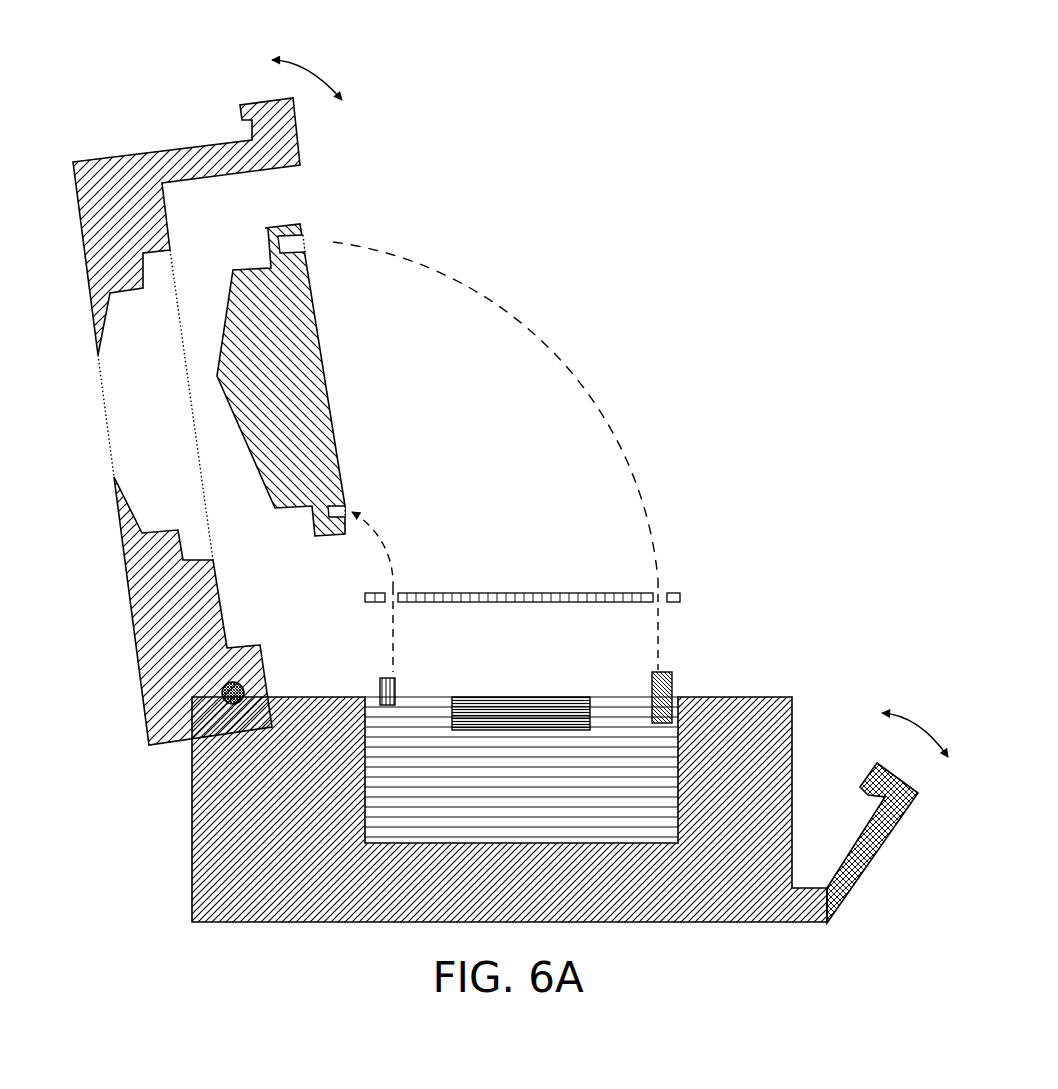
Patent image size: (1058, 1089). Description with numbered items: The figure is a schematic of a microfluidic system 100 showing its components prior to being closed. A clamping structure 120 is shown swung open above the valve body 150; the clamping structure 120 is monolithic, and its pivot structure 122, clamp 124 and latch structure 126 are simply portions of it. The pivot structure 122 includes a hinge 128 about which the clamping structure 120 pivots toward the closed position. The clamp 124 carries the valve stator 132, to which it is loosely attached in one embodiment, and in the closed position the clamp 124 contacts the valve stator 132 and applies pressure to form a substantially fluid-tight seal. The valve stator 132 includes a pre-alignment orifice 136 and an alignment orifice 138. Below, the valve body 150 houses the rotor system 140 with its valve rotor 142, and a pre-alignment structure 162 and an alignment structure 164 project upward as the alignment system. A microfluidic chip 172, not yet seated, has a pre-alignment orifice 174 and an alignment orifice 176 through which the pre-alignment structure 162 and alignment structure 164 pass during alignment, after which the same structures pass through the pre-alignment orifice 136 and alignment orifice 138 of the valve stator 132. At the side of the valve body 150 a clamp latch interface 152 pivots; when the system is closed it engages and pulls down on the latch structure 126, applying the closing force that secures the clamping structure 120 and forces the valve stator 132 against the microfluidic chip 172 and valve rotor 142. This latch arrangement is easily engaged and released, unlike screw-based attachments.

The microfluidic system 100 is at (452, 92).
The clamping structure 120 is at (200, 376).
The pivot structure 122 is at (135, 647).
The clamp 124 is at (230, 517).
The latch structure 126 is at (138, 152).
The hinge 128 is at (233, 683).
The valve stator 132 is at (284, 382).
The pre-alignment orifice 136 is at (268, 236).
The alignment orifice 138 is at (330, 517).
The rotor system 140 is at (602, 823).
The valve rotor 142 is at (534, 732).
The valve body 150 is at (712, 875).
The clamp latch interface 152 is at (880, 855).
The pre-alignment structure 162 is at (663, 670).
The alignment structure 164 is at (383, 674).
The microfluidic chip 172 is at (673, 590).
The pre-alignment orifice 174 is at (658, 588).
The alignment orifice 176 is at (395, 588).